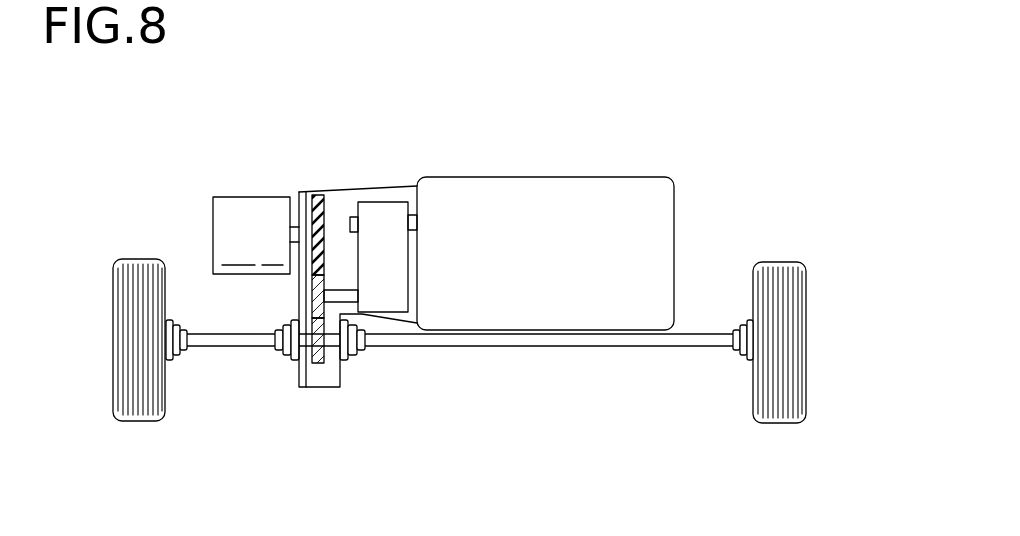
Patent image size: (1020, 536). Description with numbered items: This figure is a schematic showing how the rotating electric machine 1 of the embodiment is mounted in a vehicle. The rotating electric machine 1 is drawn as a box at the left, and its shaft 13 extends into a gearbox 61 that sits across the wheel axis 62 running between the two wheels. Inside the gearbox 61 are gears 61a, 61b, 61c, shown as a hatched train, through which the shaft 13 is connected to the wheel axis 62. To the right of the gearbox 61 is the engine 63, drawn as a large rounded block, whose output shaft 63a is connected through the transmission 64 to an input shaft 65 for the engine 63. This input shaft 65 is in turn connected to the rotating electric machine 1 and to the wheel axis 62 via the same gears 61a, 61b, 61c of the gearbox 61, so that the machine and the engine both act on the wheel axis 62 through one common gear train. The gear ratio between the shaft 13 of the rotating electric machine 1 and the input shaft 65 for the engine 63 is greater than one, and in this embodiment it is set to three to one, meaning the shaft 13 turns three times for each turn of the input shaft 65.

The rotating electric machine 1 is at (240, 196).
The shaft 13 is at (302, 196).
The gearbox 61 is at (314, 389).
The gear 61a is at (318, 195).
The gear 61b is at (312, 292).
The gear 61c is at (311, 357).
The wheel axis 62 is at (483, 348).
The engine 63 is at (604, 174).
The output shaft 63a is at (415, 216).
The transmission 64 is at (391, 198).
The input shaft 65 is at (338, 290).